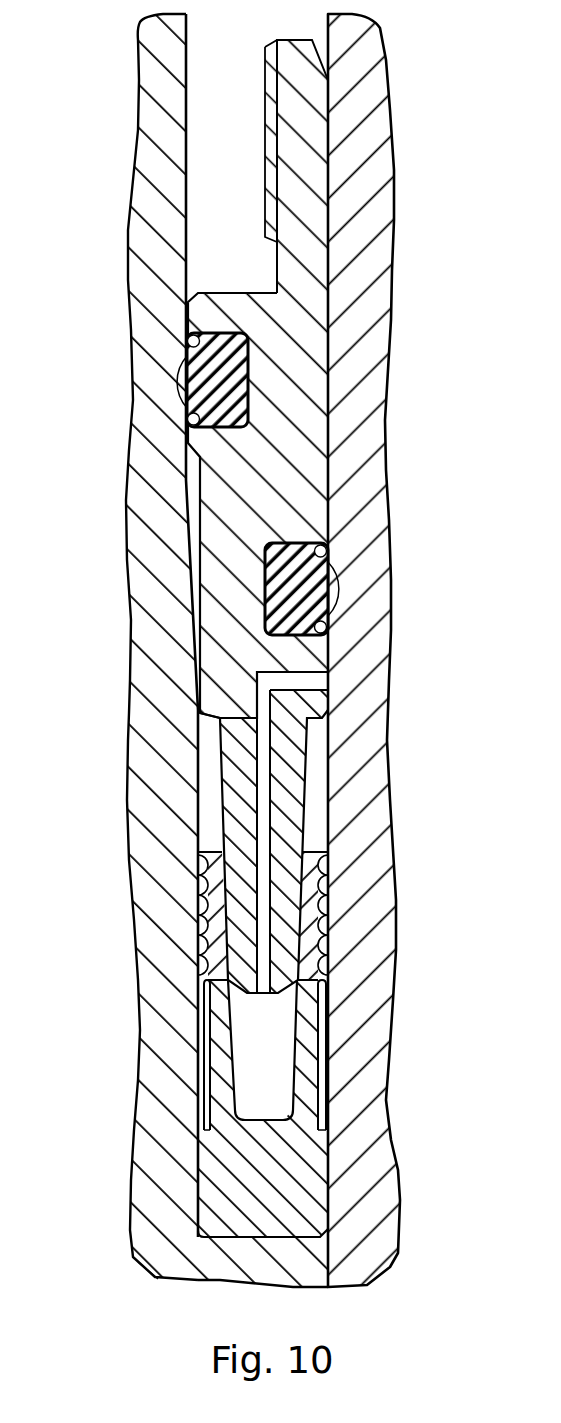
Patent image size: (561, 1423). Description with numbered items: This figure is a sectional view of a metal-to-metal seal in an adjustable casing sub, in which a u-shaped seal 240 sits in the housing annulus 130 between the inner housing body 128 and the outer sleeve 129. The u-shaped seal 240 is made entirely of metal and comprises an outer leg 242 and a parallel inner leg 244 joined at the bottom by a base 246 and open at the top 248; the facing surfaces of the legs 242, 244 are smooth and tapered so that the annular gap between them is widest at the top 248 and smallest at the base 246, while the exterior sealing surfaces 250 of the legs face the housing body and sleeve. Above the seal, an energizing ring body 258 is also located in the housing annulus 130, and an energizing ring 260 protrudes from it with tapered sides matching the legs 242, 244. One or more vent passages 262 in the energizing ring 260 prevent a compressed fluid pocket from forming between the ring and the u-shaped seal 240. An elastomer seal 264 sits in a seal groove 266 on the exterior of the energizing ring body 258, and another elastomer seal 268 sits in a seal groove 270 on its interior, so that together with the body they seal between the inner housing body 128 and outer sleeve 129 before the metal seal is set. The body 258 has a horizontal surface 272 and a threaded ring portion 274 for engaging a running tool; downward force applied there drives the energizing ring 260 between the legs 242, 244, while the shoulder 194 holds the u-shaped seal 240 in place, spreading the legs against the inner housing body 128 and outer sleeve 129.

The inner housing body 128 is at (174, 1223).
The outer sleeve 129 is at (368, 176).
The housing annulus 130 is at (187, 155).
The shoulder 194 is at (295, 1232).
The u-shaped seal 240 is at (272, 1183).
The outer leg 242 is at (310, 946).
The inner leg 244 is at (217, 886).
The base 246 is at (267, 1117).
The top 248 is at (213, 851).
The sealing surface 250 is at (204, 940).
The energizing ring body 258 is at (283, 388).
The energizing ring 260 is at (288, 823).
The vent passage 262 is at (263, 770).
The elastomer seal 264 is at (300, 586).
The seal groove 266 is at (334, 570).
The elastomer seal 268 is at (227, 405).
The seal groove 270 is at (178, 369).
The horizontal surface 272 is at (253, 293).
The threaded ring portion 274 is at (303, 173).